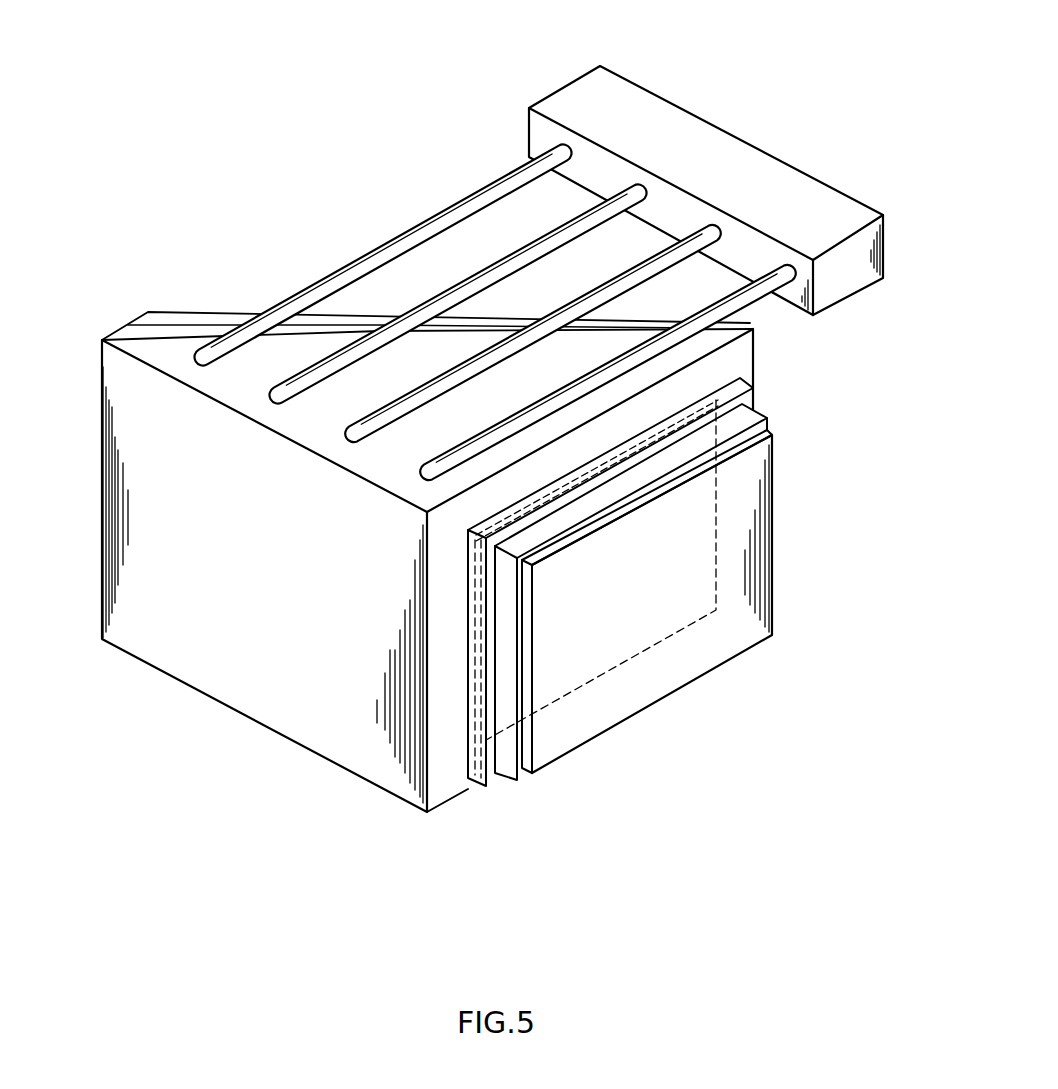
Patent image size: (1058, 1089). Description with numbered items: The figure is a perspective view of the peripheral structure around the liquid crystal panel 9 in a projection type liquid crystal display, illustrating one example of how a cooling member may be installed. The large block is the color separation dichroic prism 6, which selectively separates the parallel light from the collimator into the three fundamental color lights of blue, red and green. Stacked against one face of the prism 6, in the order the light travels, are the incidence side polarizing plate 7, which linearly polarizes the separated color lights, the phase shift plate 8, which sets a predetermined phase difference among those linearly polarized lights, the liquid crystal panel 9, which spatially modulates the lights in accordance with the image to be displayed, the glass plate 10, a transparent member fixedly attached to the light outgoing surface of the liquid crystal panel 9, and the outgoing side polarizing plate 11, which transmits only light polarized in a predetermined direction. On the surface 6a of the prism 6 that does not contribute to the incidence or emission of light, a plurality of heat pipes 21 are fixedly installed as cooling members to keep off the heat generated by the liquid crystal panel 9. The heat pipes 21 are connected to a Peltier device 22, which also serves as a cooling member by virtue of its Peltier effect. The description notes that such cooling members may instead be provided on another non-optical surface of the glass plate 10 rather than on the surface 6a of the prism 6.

The color separation dichroic prism 6 is at (208, 738).
The surface of the color separation dichroic prism 6a is at (156, 362).
The incidence side polarizing plate 7 is at (700, 395).
The phase shift plate 8 is at (715, 424).
The liquid crystal panel 9 is at (478, 786).
The glass plate 10 is at (509, 781).
The outgoing side polarizing plate 11 is at (527, 775).
The heat pipes 21 is at (567, 390).
The Peltier device 22 is at (747, 142).